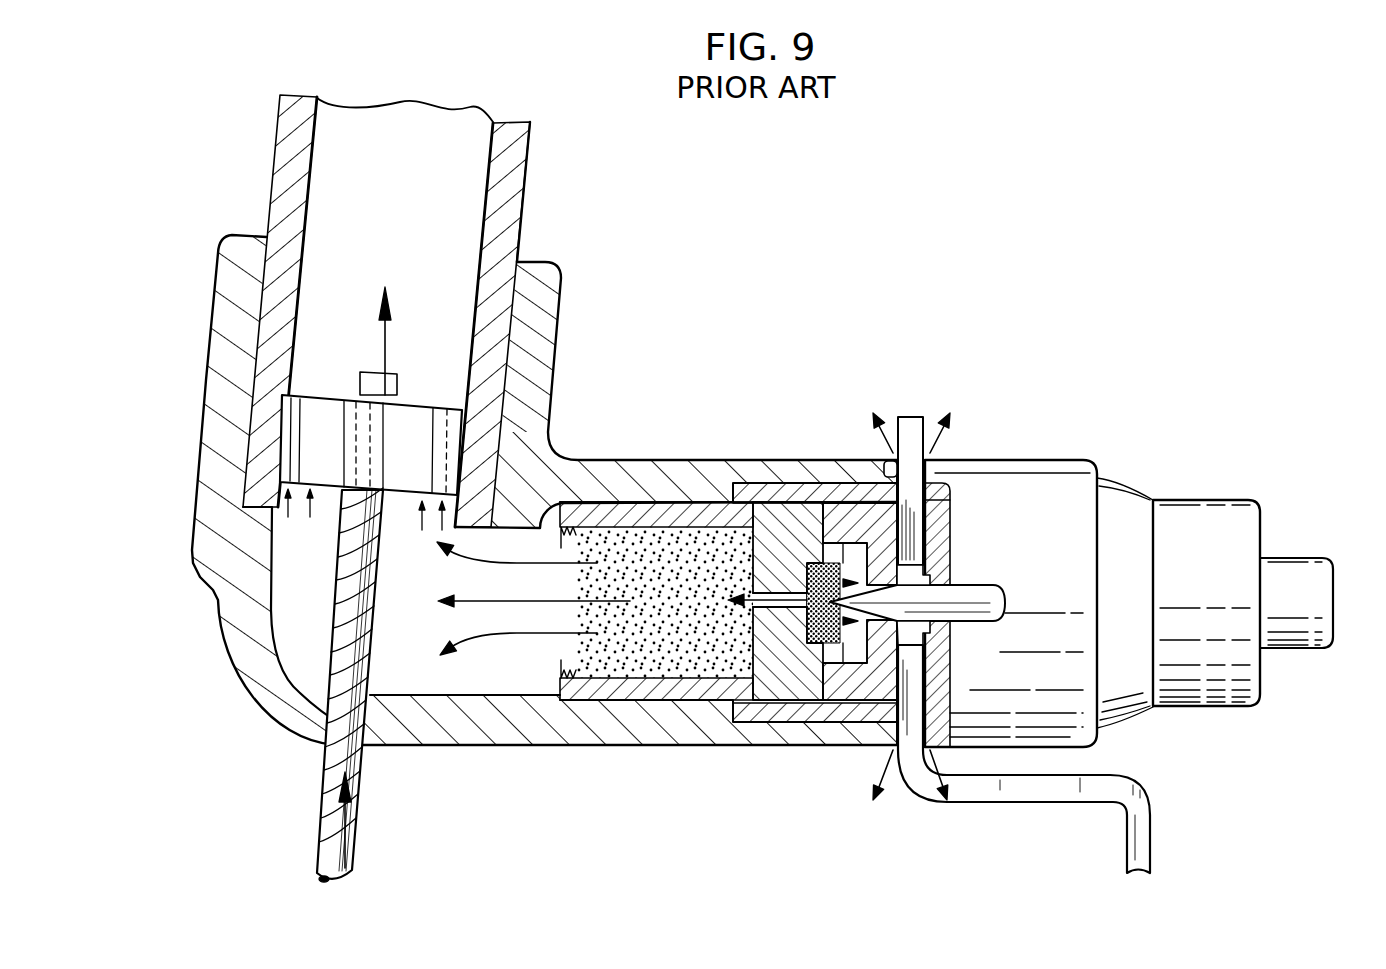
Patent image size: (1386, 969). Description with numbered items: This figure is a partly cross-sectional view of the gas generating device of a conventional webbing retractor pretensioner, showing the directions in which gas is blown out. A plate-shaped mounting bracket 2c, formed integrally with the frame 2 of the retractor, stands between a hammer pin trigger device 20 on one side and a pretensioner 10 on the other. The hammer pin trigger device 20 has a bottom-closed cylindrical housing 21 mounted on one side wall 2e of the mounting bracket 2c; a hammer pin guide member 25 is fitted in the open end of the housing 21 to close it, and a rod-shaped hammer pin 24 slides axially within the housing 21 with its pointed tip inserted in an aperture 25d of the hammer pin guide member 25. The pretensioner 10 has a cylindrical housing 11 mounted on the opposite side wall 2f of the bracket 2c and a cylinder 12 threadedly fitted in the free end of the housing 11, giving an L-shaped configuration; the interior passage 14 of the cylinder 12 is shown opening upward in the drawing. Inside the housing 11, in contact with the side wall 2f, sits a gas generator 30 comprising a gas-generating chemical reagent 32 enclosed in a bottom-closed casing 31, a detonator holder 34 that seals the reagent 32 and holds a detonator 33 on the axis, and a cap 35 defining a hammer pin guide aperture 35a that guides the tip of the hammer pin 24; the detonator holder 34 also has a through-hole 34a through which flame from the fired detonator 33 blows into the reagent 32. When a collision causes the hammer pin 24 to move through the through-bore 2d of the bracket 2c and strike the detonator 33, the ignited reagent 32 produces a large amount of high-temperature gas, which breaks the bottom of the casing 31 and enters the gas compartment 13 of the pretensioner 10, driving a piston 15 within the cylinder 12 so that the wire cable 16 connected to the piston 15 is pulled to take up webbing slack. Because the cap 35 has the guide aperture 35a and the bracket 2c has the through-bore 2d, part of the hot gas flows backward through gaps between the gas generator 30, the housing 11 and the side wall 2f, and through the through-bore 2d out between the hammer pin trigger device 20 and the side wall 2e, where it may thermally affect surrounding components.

The frame 2 is at (1022, 608).
The mounting bracket 2c is at (913, 453).
The through-bore 2d is at (919, 770).
The side wall 2e is at (957, 477).
The side wall 2f is at (890, 459).
The pretensioner 10 is at (575, 305).
The housing 11 is at (563, 477).
The cylinder 12 is at (513, 195).
The gas compartment 13 is at (288, 601).
The bore 14 is at (337, 180).
The piston 15 is at (343, 427).
The wire cable 16 is at (340, 752).
The hammer pin trigger device 20 is at (1094, 629).
The housing 21 is at (1247, 547).
The hammer pin 24 is at (953, 597).
The hammer pin guide member 25 is at (1000, 633).
The aperture 25d is at (975, 575).
The gas generator 30 is at (721, 599).
The casing 31 is at (630, 693).
The gas-generating chemical reagent 32 is at (657, 616).
The detonator 33 is at (812, 640).
The detonator holder 34 is at (810, 687).
The through-hole 34a is at (767, 687).
The cap 35 is at (860, 690).
The hammer pin guide aperture 35a is at (873, 580).